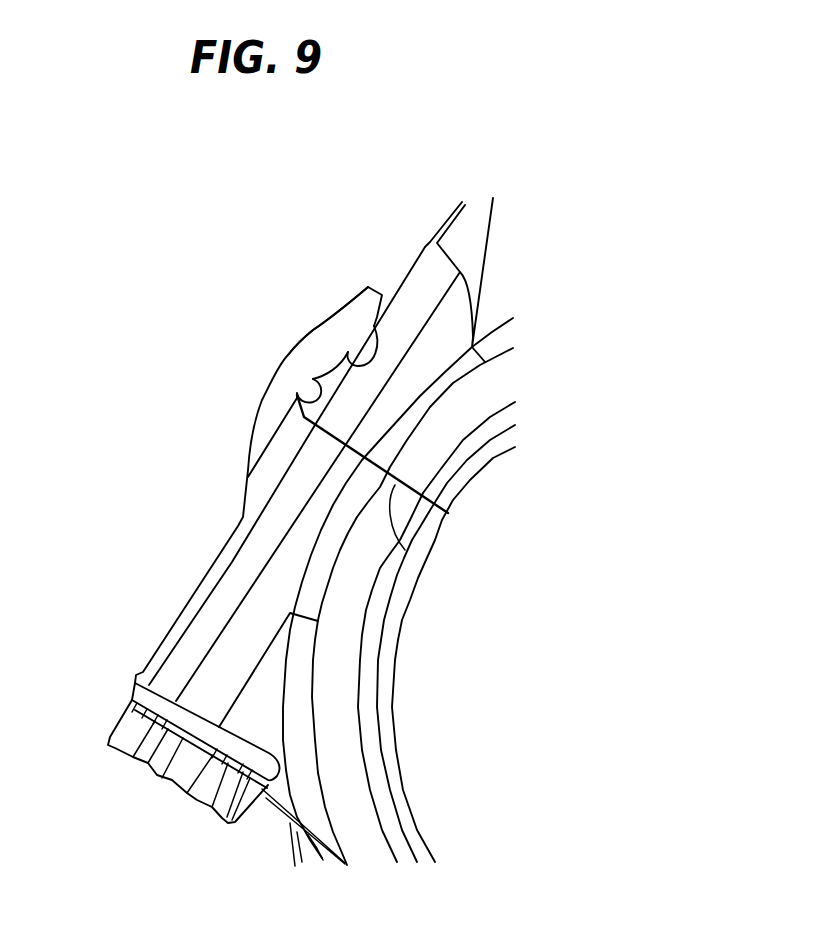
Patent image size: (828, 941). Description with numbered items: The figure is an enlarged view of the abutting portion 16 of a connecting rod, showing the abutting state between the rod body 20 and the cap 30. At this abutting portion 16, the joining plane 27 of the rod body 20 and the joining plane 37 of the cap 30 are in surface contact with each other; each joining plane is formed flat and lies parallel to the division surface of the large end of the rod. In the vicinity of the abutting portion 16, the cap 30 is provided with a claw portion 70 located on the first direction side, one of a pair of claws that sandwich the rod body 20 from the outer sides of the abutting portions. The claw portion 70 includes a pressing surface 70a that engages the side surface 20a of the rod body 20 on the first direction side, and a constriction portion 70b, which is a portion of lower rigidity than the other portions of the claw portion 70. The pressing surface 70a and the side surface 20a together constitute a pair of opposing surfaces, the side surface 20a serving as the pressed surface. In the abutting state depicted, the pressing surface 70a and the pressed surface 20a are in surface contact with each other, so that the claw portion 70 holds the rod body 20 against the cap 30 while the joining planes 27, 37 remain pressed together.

The abutting portion 16 is at (225, 394).
The rod body 20 is at (438, 211).
The side surface 20a is at (403, 283).
The joining plane 27 is at (405, 550).
The cap 30 is at (199, 561).
The joining plane 37 is at (395, 485).
The claw portion 70 is at (303, 329).
The pressing surface 70a is at (376, 345).
The constriction portion 70b is at (313, 379).